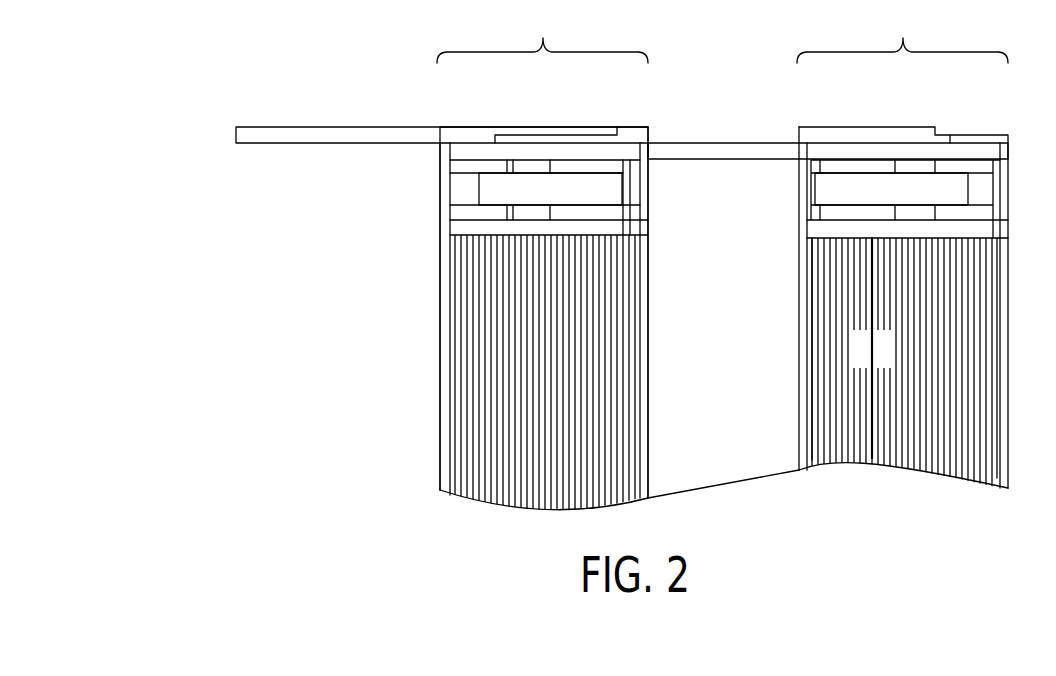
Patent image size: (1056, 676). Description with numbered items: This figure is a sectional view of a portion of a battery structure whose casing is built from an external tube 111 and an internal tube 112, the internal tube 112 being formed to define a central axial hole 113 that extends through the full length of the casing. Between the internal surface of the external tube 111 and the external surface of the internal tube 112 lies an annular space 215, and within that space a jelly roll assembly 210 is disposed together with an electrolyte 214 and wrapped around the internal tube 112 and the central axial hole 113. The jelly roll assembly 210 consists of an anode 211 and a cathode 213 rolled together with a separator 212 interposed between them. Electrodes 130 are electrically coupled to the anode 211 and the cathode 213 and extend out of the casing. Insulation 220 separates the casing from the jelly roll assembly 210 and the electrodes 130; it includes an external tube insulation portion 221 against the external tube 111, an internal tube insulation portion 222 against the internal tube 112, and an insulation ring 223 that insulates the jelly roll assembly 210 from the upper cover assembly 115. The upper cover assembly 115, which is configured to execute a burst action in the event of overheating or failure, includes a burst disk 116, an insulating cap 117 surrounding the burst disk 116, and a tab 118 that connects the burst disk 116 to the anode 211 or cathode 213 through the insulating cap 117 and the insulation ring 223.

The electrodes 130 is at (340, 127).
The annular space 215 is at (722, 32).
The insulation ring 223 is at (530, 228).
The tab 118 is at (626, 203).
The burst disk 116 is at (882, 188).
The insulating cap 117 is at (985, 190).
The upper cover assembly 115 is at (440, 188).
The insulation 220 is at (447, 262).
The jelly roll assembly 210 is at (480, 345).
The external tube 111 is at (440, 400).
The external tube insulation portion 221 is at (450, 440).
The central axial hole 113 is at (738, 326).
The internal tube insulation portion 222 is at (640, 368).
The internal tube 112 is at (647, 420).
The electrolyte 214 is at (887, 364).
The anode 211 is at (852, 458).
The separator 212 is at (872, 455).
The cathode 213 is at (900, 420).